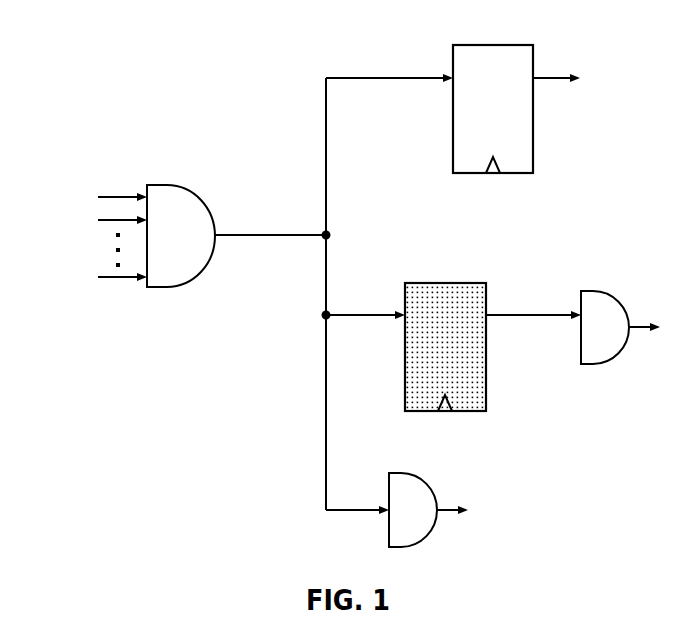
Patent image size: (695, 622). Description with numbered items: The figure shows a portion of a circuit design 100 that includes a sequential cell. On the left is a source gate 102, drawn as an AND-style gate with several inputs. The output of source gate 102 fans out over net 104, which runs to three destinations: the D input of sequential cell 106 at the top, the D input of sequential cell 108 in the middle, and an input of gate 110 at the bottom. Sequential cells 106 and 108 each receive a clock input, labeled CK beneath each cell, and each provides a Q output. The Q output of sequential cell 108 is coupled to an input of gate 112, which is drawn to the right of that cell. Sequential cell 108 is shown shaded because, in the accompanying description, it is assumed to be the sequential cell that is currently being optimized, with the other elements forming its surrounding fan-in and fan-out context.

The circuit design 100 is at (150, 121).
The source gate 102 is at (156, 236).
The net 104 is at (322, 93).
The sequential cell 106 is at (516, 113).
The sequential cell 108 is at (493, 351).
The gate 110 is at (428, 510).
The gate 112 is at (620, 327).